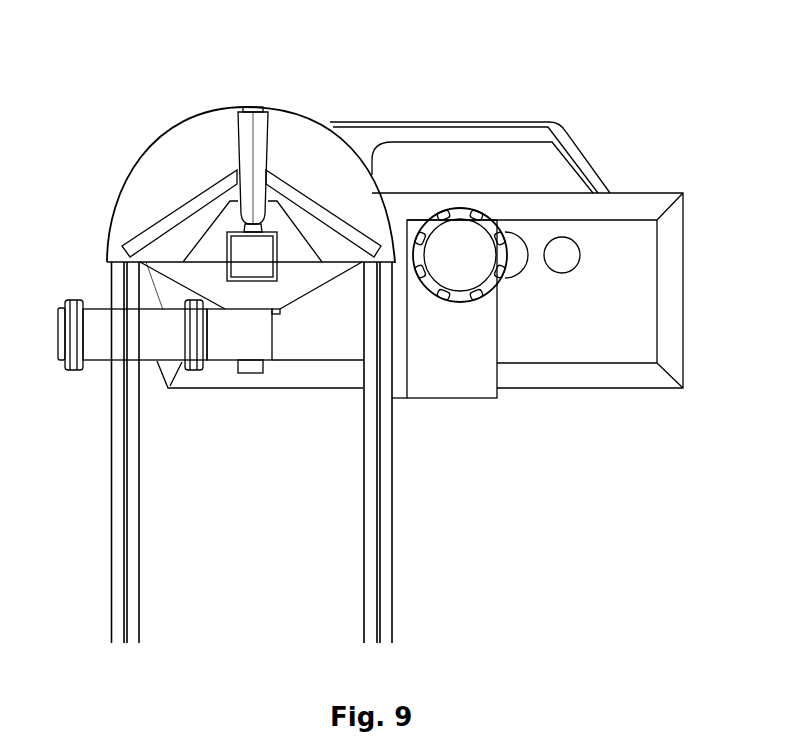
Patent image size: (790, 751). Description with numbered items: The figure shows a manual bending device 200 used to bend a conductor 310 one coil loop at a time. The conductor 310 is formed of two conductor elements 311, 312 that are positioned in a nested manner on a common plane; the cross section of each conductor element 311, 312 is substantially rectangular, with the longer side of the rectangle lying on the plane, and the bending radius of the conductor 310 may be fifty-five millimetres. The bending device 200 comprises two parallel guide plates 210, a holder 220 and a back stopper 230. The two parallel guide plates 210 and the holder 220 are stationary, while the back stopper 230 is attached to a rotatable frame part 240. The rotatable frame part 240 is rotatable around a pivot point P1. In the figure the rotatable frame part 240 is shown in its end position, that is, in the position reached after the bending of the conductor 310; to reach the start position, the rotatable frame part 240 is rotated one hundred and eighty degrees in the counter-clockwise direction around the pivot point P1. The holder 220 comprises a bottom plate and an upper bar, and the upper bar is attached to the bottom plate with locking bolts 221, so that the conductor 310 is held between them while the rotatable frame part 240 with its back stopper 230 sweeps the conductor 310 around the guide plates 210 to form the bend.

The manual bending device 200 is at (131, 89).
The parallel guide plates 210 is at (273, 132).
The holder 220 is at (148, 347).
The locking bolts 221 is at (73, 370).
The back stopper 230 is at (458, 385).
The rotatable frame part 240 is at (603, 380).
The conductor 310 is at (370, 552).
The conductor element 311 is at (118, 547).
The conductor element 312 is at (133, 543).
The pivot point P1 is at (248, 256).